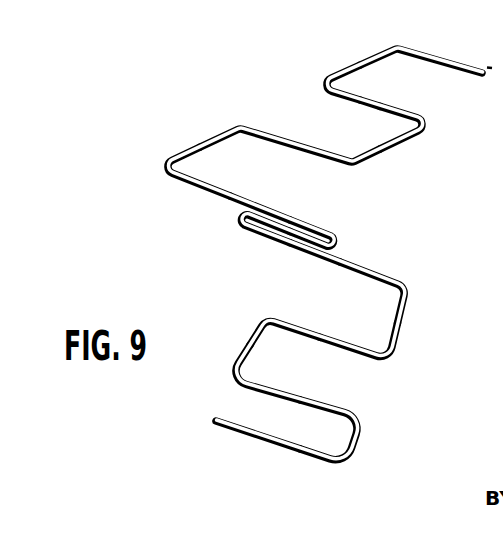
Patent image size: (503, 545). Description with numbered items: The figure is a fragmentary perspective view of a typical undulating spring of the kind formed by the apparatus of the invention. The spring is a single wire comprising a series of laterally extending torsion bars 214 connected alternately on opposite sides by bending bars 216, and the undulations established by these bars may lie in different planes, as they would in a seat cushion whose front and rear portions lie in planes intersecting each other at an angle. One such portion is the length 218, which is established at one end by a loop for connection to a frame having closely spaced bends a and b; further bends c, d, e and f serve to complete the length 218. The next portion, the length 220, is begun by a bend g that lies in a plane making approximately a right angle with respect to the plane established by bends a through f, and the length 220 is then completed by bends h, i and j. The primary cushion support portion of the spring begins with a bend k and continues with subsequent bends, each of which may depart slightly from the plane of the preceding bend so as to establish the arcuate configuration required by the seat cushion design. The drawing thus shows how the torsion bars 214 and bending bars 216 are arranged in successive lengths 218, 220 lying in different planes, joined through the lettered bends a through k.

The torsion bar 214 is at (341, 102).
The bending bar 216 is at (350, 65).
The length 218 is at (334, 376).
The length 220 is at (274, 211).
The bend a is at (325, 459).
The bend b is at (354, 428).
The bend c is at (232, 375).
The bend d is at (262, 319).
The bend e is at (386, 354).
The bend f is at (388, 292).
The bend g is at (292, 254).
The bend h is at (237, 220).
The bend i is at (337, 244).
The bend j is at (277, 209).
The bend k is at (163, 170).